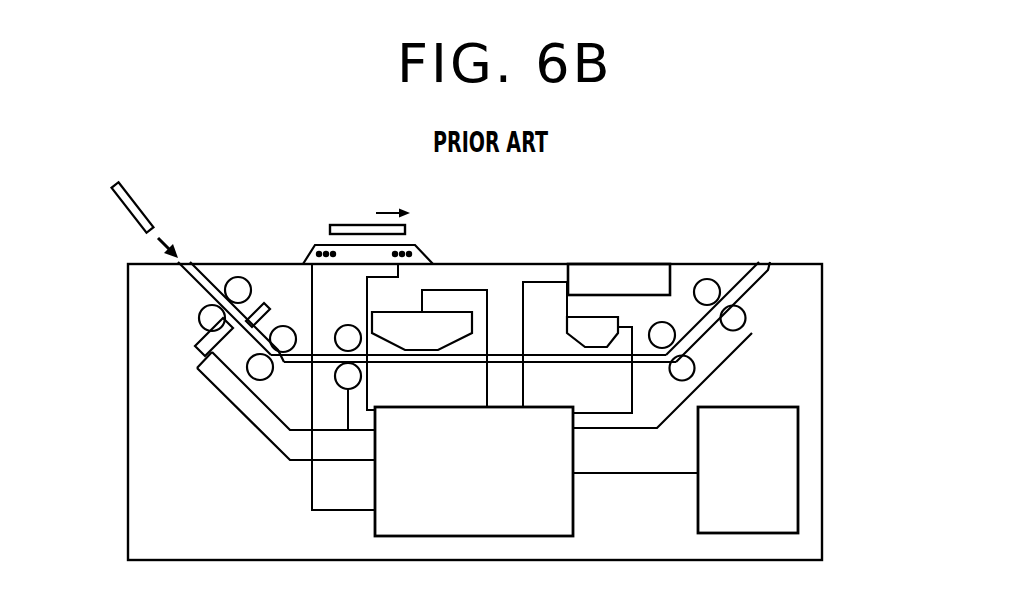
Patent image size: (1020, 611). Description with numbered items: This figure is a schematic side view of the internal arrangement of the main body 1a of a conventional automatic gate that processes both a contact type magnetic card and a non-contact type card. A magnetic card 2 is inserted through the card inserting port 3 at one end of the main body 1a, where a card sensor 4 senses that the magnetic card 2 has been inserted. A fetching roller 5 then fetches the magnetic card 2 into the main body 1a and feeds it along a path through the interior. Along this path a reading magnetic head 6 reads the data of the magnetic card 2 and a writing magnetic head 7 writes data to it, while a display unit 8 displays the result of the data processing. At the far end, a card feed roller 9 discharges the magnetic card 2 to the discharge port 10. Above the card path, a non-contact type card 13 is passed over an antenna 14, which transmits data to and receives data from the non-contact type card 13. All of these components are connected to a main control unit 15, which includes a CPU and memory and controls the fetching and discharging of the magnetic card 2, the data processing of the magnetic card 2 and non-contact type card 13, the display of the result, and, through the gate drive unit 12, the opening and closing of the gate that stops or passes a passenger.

The main body 1a is at (128, 438).
The magnetic card 2 is at (137, 202).
The card inserting port 3 is at (186, 262).
The card sensor 4 is at (205, 343).
The fetching roller 5 is at (280, 325).
The reading magnetic head 6 is at (402, 317).
The writing magnetic head 7 is at (580, 325).
The display unit 8 is at (621, 272).
The card feed roller 9 is at (665, 325).
The discharge port 10 is at (766, 262).
The gate drive unit 12 is at (736, 525).
The non-contact type card 13 is at (353, 226).
The antenna 14 is at (413, 245).
The main control unit 15 is at (490, 536).